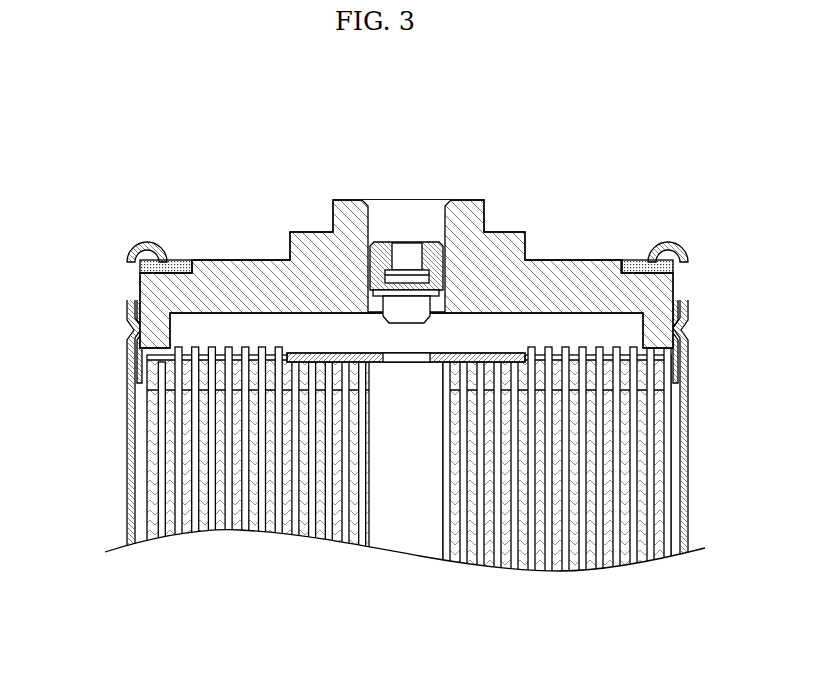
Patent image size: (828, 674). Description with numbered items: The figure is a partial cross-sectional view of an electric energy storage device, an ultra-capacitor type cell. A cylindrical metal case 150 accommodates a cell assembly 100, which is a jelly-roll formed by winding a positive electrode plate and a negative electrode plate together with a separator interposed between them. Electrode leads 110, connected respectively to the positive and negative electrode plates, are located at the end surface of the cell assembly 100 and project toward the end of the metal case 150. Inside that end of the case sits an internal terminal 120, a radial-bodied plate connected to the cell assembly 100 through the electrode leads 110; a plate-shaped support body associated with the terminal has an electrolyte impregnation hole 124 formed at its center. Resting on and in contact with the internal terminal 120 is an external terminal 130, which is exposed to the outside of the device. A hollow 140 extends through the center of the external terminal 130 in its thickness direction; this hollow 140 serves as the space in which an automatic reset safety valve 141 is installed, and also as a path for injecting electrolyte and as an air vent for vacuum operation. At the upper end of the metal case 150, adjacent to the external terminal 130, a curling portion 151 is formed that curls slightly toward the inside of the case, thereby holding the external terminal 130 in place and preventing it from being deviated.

The cell assembly 100 is at (150, 428).
The electrode leads 110 is at (210, 354).
The internal terminal 120 is at (287, 343).
The electrolyte impregnation hole 124 is at (420, 350).
The external terminal 130 is at (292, 214).
The hollow 140 is at (429, 206).
The automatic reset safety valve 141 is at (415, 306).
The metal case 150 is at (127, 473).
The curling portion 151 is at (139, 234).